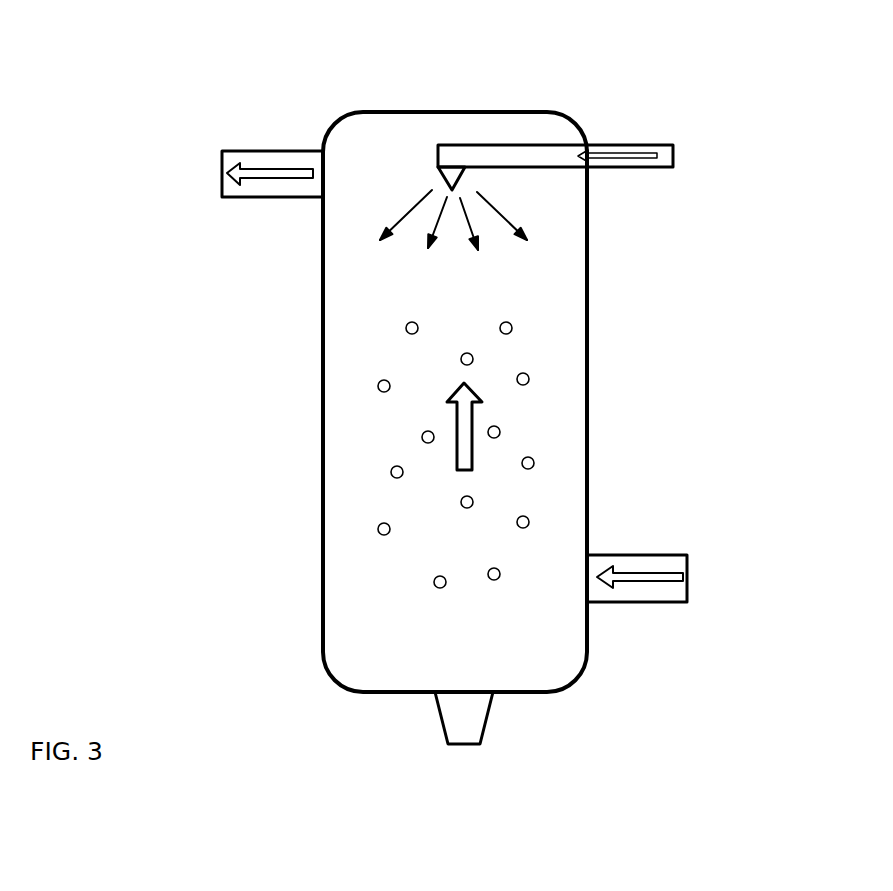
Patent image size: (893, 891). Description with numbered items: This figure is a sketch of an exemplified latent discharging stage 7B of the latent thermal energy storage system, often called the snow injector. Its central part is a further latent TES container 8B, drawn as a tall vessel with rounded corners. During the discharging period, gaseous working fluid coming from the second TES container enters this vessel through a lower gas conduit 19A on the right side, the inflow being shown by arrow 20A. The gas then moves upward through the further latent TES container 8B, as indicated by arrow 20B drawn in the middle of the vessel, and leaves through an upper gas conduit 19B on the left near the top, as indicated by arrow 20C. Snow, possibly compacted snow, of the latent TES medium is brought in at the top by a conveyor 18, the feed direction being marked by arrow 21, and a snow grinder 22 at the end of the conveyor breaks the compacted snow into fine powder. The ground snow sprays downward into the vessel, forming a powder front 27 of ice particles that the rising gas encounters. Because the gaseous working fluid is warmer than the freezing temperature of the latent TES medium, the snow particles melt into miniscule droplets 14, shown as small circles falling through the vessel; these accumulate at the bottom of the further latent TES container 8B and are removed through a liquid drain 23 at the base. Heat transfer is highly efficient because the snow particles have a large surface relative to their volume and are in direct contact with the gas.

The latent discharging stage 7B is at (127, 72).
The further latent TES container 8B is at (583, 131).
The conveyor 18 is at (643, 145).
The arrow 21 is at (658, 157).
The snow grinder 22 is at (460, 175).
The powder front 27 is at (497, 203).
The miniscule droplets 14 is at (511, 333).
The arrow 20B is at (476, 407).
The lower gas conduit 19A is at (645, 553).
The arrow 20A is at (667, 582).
The upper gas conduit 19B is at (242, 150).
The arrow 20C is at (272, 181).
The liquid drain 23 is at (463, 726).